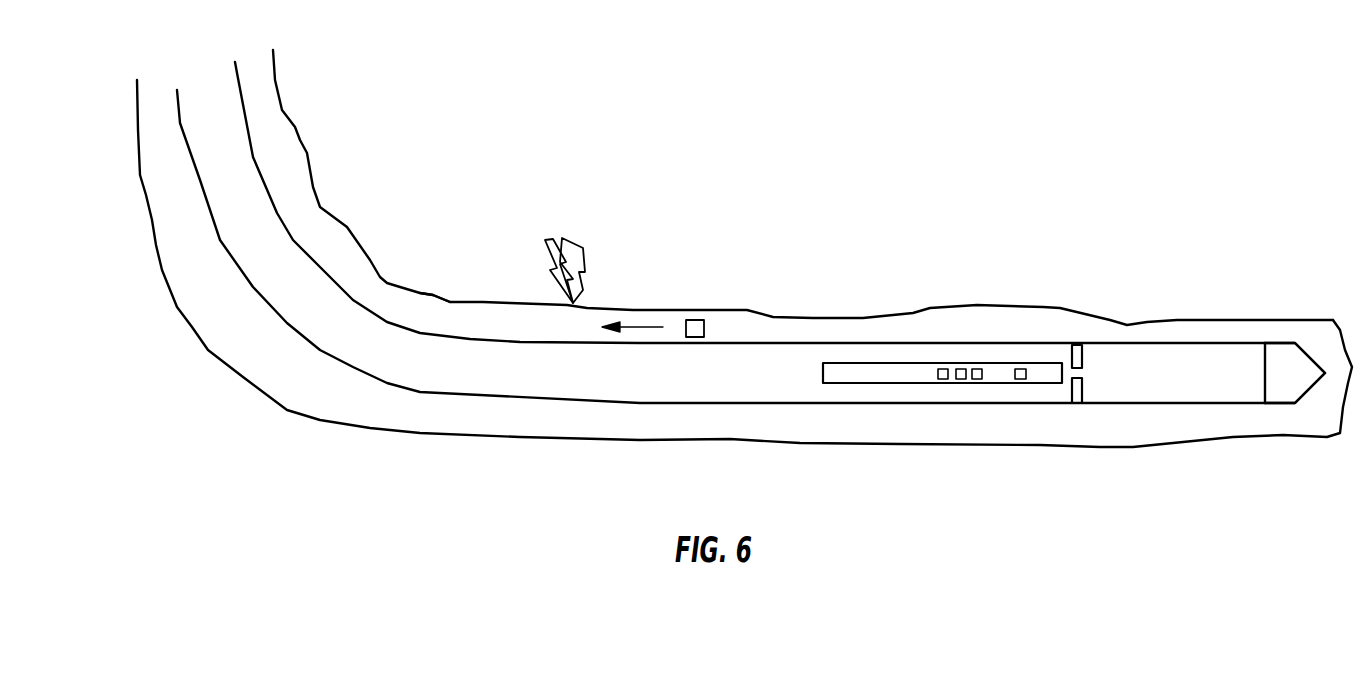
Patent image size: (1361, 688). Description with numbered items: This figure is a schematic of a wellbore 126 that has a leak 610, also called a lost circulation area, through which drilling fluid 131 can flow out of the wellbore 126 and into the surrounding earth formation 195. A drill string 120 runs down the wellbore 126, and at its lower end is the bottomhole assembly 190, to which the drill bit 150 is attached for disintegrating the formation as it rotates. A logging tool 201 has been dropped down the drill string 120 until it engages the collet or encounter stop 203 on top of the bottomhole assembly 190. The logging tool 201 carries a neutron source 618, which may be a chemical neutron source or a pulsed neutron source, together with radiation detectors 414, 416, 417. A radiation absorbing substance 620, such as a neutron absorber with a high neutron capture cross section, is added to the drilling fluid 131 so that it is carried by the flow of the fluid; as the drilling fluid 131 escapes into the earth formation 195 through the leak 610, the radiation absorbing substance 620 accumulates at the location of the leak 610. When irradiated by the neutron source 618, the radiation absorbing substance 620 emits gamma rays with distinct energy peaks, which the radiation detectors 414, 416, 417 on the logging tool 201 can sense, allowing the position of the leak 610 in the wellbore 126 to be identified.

The earth formation 195 is at (380, 100).
The drill string 120 is at (322, 273).
The wellbore 126 is at (437, 300).
The drilling fluid 131 is at (480, 317).
The leak 610 is at (573, 303).
The radiation absorbing substance 620 is at (693, 318).
The logging tool 201 is at (855, 372).
The radiation detector 417 is at (943, 368).
The radiation detector 416 is at (977, 368).
The radiation detector 414 is at (960, 380).
The neutron source 618 is at (1020, 380).
The collet or encounter stop 203 is at (1075, 343).
The bottomhole assembly 190 is at (1142, 330).
The drill bit 150 is at (1277, 340).